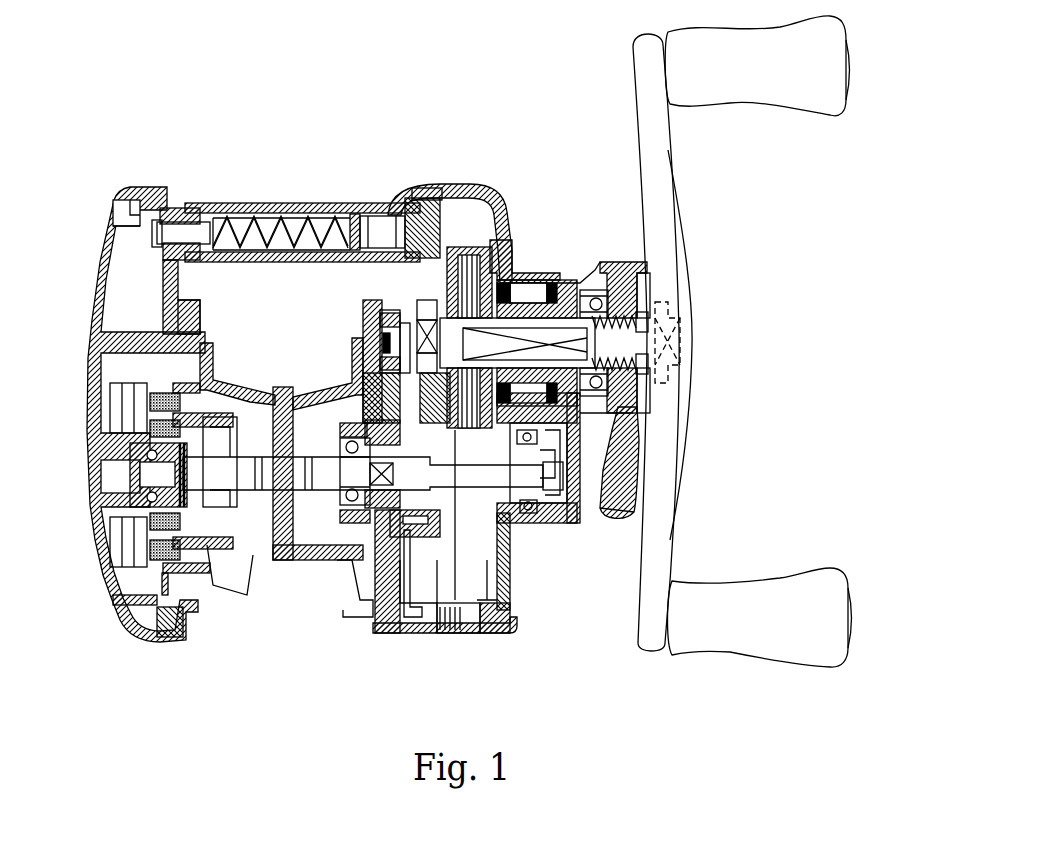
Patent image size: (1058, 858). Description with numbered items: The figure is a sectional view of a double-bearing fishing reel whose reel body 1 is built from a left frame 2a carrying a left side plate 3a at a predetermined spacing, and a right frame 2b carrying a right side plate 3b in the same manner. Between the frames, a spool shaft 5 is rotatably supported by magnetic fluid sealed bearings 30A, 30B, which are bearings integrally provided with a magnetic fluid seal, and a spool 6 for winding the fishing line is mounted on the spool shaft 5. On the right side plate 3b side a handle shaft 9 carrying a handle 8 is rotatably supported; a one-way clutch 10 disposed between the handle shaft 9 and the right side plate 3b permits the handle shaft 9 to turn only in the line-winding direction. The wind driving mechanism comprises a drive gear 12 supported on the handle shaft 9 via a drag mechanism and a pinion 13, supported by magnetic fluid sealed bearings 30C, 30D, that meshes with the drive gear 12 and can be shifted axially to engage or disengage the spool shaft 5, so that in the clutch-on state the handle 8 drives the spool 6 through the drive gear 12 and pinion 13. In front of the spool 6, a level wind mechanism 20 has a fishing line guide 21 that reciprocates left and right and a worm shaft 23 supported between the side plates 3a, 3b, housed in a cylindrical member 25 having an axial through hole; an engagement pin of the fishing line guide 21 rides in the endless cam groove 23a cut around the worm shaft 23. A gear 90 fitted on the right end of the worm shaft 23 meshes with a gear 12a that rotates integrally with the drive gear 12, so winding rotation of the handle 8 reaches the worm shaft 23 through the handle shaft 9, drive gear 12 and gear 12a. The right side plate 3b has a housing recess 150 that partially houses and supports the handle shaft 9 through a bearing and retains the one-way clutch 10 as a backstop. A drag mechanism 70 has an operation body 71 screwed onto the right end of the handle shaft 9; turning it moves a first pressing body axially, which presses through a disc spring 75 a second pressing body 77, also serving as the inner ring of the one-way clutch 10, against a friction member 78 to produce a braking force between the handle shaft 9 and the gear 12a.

The reel body 1 is at (442, 135).
The left frame 2a is at (196, 300).
The right frame 2b is at (400, 193).
The left side plate 3a is at (103, 260).
The right side plate 3b is at (500, 247).
The spool shaft 5 is at (262, 475).
The spool 6 is at (288, 397).
The handle 8 is at (655, 175).
The handle shaft 9 is at (605, 332).
The one-way clutch 10 is at (533, 290).
The drive gear 12 is at (485, 432).
The gear 12a is at (440, 267).
The pinion 13 is at (465, 432).
The level wind mechanism 20 is at (277, 196).
The fishing line guide 21 is at (350, 207).
The worm shaft 23 is at (248, 215).
The endless cam groove 23a is at (260, 250).
The cylindrical member 25 is at (168, 207).
The magnetic fluid sealed bearing 30A is at (153, 493).
The magnetic fluid sealed bearing 30B is at (350, 503).
The magnetic fluid sealed bearing 30C is at (365, 525).
The magnetic fluid sealed bearing 30D is at (522, 505).
The drag mechanism 70 is at (621, 532).
The operation body 71 is at (630, 482).
The disc spring 75 is at (580, 280).
The second pressing body 77 is at (512, 298).
The friction member 78 is at (477, 262).
The gear 90 is at (420, 190).
The housing recess 150 is at (537, 397).